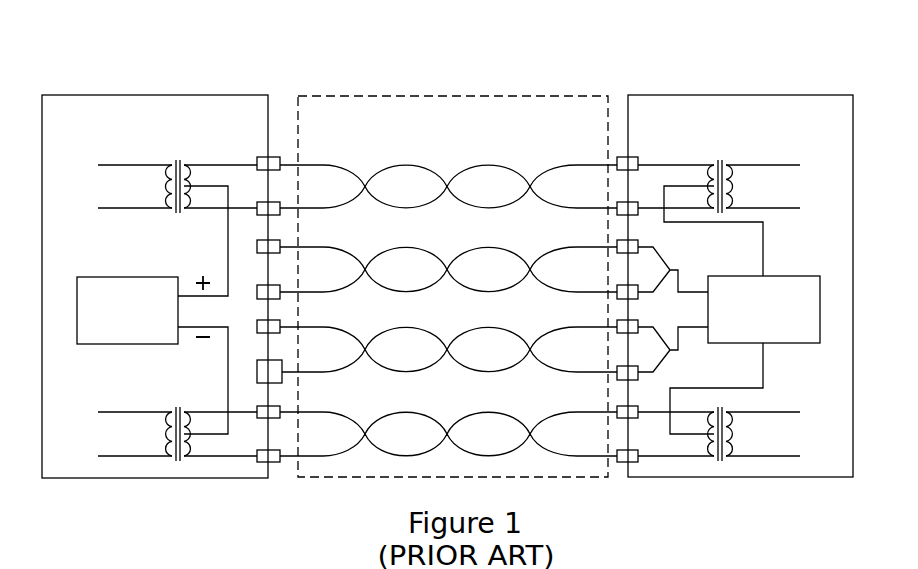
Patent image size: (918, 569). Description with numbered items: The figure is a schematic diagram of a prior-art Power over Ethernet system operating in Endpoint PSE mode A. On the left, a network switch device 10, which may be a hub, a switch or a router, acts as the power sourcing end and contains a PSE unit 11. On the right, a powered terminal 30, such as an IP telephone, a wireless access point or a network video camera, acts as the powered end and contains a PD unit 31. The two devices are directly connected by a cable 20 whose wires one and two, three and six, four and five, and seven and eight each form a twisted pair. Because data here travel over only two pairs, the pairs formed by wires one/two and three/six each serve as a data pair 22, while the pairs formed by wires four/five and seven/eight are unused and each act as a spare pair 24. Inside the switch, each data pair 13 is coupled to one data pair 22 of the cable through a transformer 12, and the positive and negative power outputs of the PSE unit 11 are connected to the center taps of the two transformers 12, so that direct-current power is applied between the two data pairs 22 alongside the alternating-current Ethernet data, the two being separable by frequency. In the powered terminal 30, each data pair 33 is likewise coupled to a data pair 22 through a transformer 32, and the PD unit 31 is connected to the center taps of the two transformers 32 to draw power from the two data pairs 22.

The network switch device 10 is at (193, 95).
The PSE unit 11 is at (112, 277).
The transformer 12 is at (187, 165).
The data pair 13 is at (105, 165).
The cable 20 is at (463, 96).
The data pair 22 is at (310, 165).
The spare pair 24 is at (310, 247).
The powered terminal 30 is at (785, 95).
The PD unit 31 is at (783, 276).
The transformer 32 is at (713, 165).
The data pair 33 is at (787, 165).